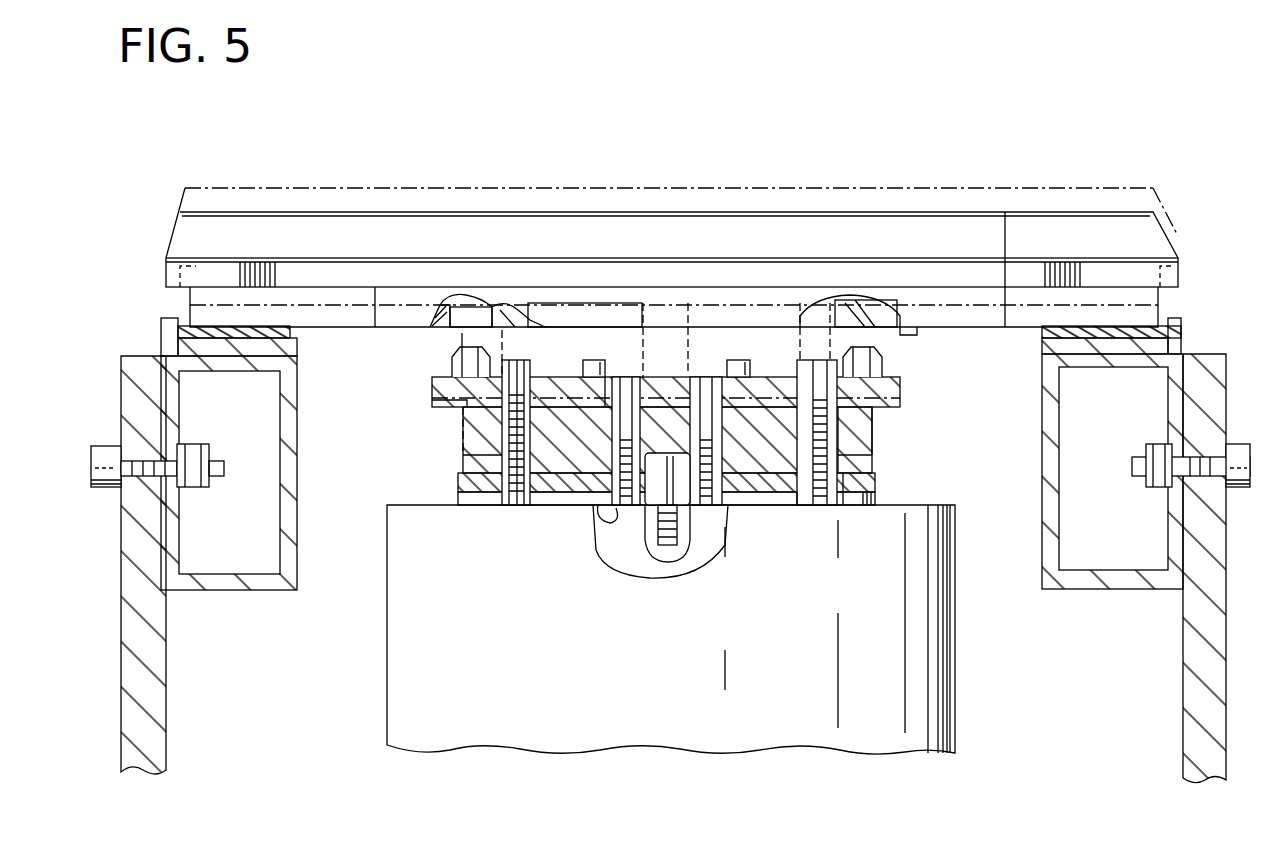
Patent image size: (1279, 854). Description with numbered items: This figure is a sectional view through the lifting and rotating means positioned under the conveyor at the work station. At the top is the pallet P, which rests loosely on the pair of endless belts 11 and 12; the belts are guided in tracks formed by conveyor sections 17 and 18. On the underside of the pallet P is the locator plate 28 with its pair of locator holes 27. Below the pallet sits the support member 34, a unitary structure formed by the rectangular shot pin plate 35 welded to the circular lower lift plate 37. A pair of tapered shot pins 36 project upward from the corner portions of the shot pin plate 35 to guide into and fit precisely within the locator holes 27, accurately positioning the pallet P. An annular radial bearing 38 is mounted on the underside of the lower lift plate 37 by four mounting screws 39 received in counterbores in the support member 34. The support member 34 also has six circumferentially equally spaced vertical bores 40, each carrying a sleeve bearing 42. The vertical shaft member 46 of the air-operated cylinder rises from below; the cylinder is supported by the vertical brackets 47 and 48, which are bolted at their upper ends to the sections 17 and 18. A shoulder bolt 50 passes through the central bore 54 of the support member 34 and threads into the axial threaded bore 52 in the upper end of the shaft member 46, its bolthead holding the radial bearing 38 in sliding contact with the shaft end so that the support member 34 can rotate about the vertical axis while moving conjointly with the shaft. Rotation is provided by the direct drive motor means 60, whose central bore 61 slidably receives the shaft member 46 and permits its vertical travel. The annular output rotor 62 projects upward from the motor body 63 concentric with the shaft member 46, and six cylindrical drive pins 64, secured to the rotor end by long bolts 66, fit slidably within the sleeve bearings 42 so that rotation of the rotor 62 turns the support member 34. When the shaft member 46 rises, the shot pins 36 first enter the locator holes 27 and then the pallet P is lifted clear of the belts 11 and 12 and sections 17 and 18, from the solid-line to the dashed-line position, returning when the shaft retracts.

The pallet P is at (405, 214).
The endless belt 11 is at (170, 330).
The endless belt 12 is at (1170, 332).
The conveyor section 17 is at (265, 579).
The conveyor section 18 is at (1121, 579).
The locator hole 27 is at (492, 298).
The locator plate 28 is at (433, 296).
The support member 34 is at (437, 333).
The shot pin plate 35 is at (905, 390).
The shot pin 36 is at (450, 366).
The lower lift plate 37 is at (873, 418).
The radial bearing 38 is at (597, 497).
The mounting screw 39 is at (627, 382).
The vertically extending bore 40 is at (468, 453).
The sleeve bearing 42 is at (470, 421).
The shaft member 46 is at (628, 548).
The vertical bracket 47 is at (158, 620).
The vertical bracket 48 is at (1192, 679).
The shoulder bolt 50 is at (690, 522).
The threaded bore 52 is at (662, 562).
The central bore 54 is at (640, 388).
The direct drive motor means 60 is at (505, 698).
The central bore 61 is at (613, 510).
The output rotor 62 is at (832, 483).
The motor body 63 is at (852, 472).
The drive pin 64 is at (845, 432).
The long bolt 66 is at (588, 366).